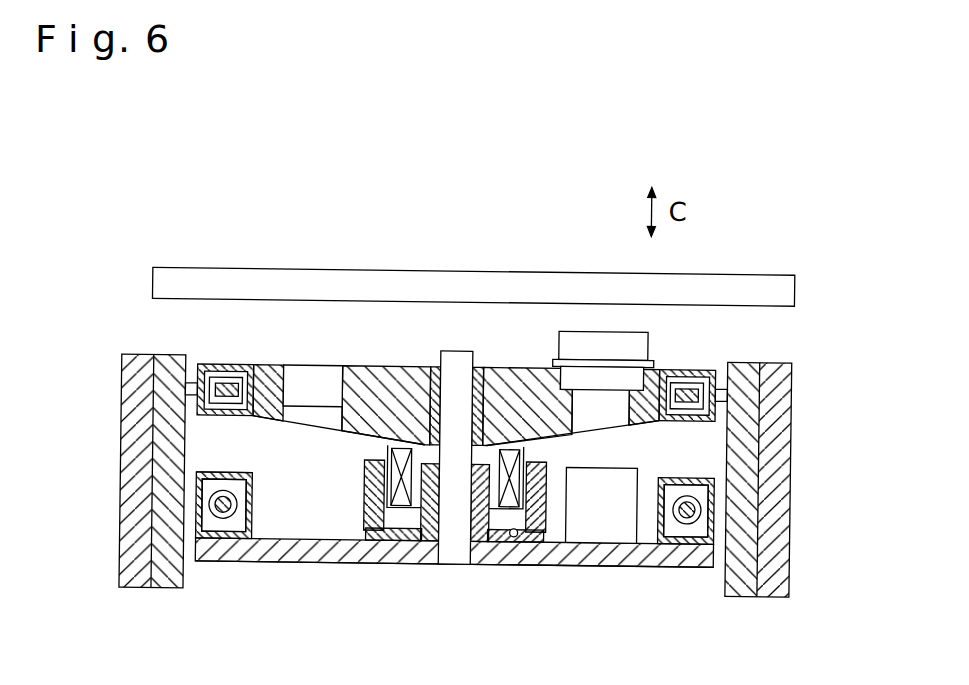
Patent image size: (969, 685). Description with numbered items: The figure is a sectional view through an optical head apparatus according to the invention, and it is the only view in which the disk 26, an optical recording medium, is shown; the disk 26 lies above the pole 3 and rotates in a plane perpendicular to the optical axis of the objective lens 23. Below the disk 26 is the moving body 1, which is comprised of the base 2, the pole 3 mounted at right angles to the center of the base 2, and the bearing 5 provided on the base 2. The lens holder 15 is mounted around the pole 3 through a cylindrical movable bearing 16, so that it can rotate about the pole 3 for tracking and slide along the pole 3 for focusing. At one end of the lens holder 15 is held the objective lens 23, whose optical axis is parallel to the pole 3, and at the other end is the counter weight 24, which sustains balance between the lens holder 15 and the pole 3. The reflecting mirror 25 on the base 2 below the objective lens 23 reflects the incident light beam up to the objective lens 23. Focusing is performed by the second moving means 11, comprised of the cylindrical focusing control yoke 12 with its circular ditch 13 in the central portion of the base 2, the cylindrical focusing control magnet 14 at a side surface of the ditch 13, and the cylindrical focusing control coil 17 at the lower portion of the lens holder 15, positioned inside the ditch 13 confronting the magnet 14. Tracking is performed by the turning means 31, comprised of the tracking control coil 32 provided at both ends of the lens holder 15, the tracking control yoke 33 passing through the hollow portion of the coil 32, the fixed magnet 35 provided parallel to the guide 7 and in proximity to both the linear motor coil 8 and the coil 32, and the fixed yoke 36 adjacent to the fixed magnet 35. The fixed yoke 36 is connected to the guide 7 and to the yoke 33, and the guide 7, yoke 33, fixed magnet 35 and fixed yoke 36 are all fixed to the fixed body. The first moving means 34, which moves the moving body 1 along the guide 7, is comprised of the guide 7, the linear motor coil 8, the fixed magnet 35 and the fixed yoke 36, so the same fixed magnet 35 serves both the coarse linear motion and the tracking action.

The moving body 1 is at (310, 561).
The base 2 is at (547, 561).
The pole 3 is at (452, 348).
The bearing 5 is at (218, 561).
The guide 7 is at (243, 561).
The linear motor coil 8 is at (232, 472).
The second moving means 11 is at (365, 508).
The focusing control yoke 12 is at (383, 561).
The circular ditch 13 is at (512, 540).
The focusing control magnet 14 is at (368, 458).
The lens holder 15 is at (368, 364).
The cylindrical movable bearing 16 is at (437, 364).
The focusing control coil 17 is at (407, 561).
The objective lens 23 is at (560, 328).
The counter weight 24 is at (308, 364).
The reflecting mirror 25 is at (605, 530).
The disk 26 is at (222, 268).
The turning means 31 is at (683, 420).
The tracking control coil 32 is at (240, 365).
The tracking control yoke 33 is at (230, 383).
The first moving means 34 is at (253, 477).
The fixed magnet 35 is at (173, 354).
The fixed yoke 36 is at (121, 433).